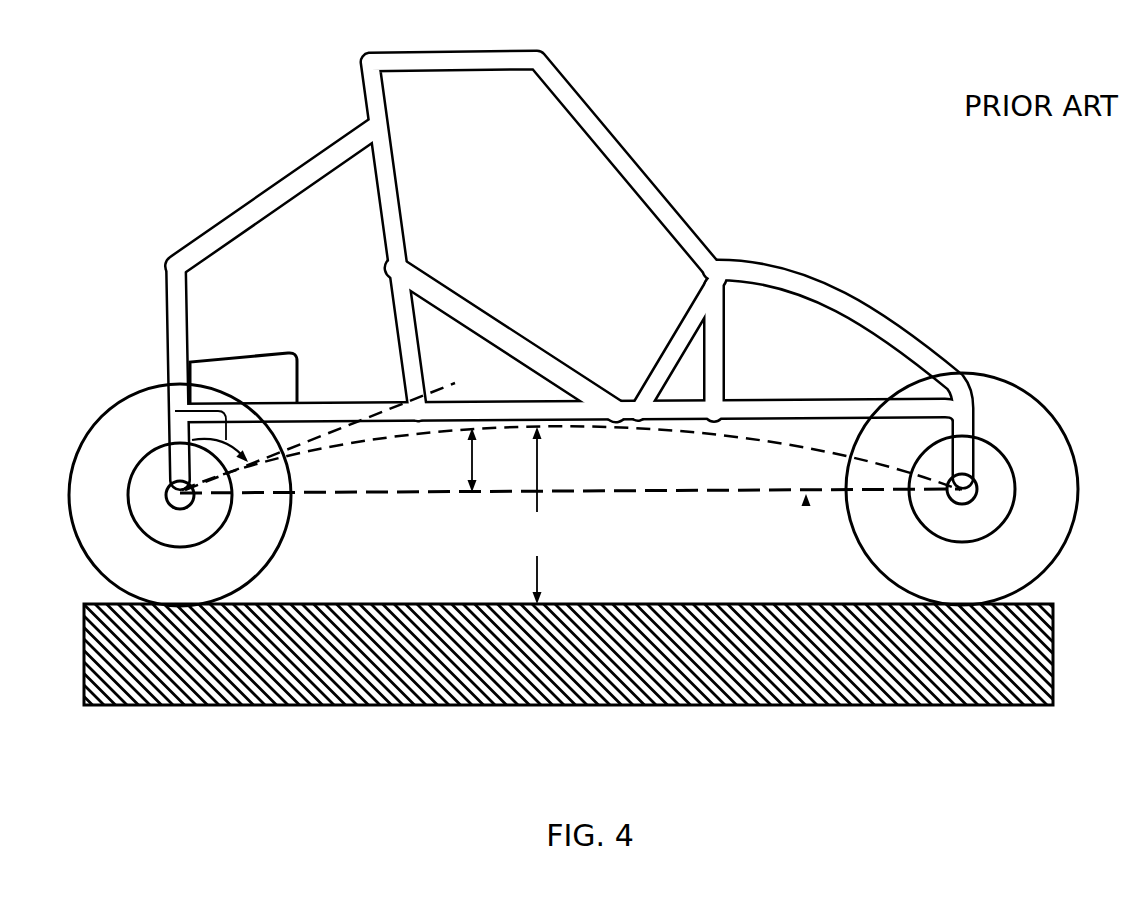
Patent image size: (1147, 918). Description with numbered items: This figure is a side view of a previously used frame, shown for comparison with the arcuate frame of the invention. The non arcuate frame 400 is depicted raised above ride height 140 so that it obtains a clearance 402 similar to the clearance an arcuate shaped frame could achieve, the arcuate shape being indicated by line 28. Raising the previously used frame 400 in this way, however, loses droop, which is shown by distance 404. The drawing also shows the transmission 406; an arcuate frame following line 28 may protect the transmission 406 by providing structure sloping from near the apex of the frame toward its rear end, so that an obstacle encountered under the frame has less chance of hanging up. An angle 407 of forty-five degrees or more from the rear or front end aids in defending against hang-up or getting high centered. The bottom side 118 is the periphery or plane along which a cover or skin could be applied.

The non arcuate frame 400 is at (812, 412).
The clearance 402 is at (531, 515).
The distance 404 is at (472, 460).
The transmission 406 is at (252, 377).
The angle 407 is at (193, 412).
The bottom side 118 is at (571, 519).
The line 28 is at (777, 440).
The ride height 140 is at (806, 505).